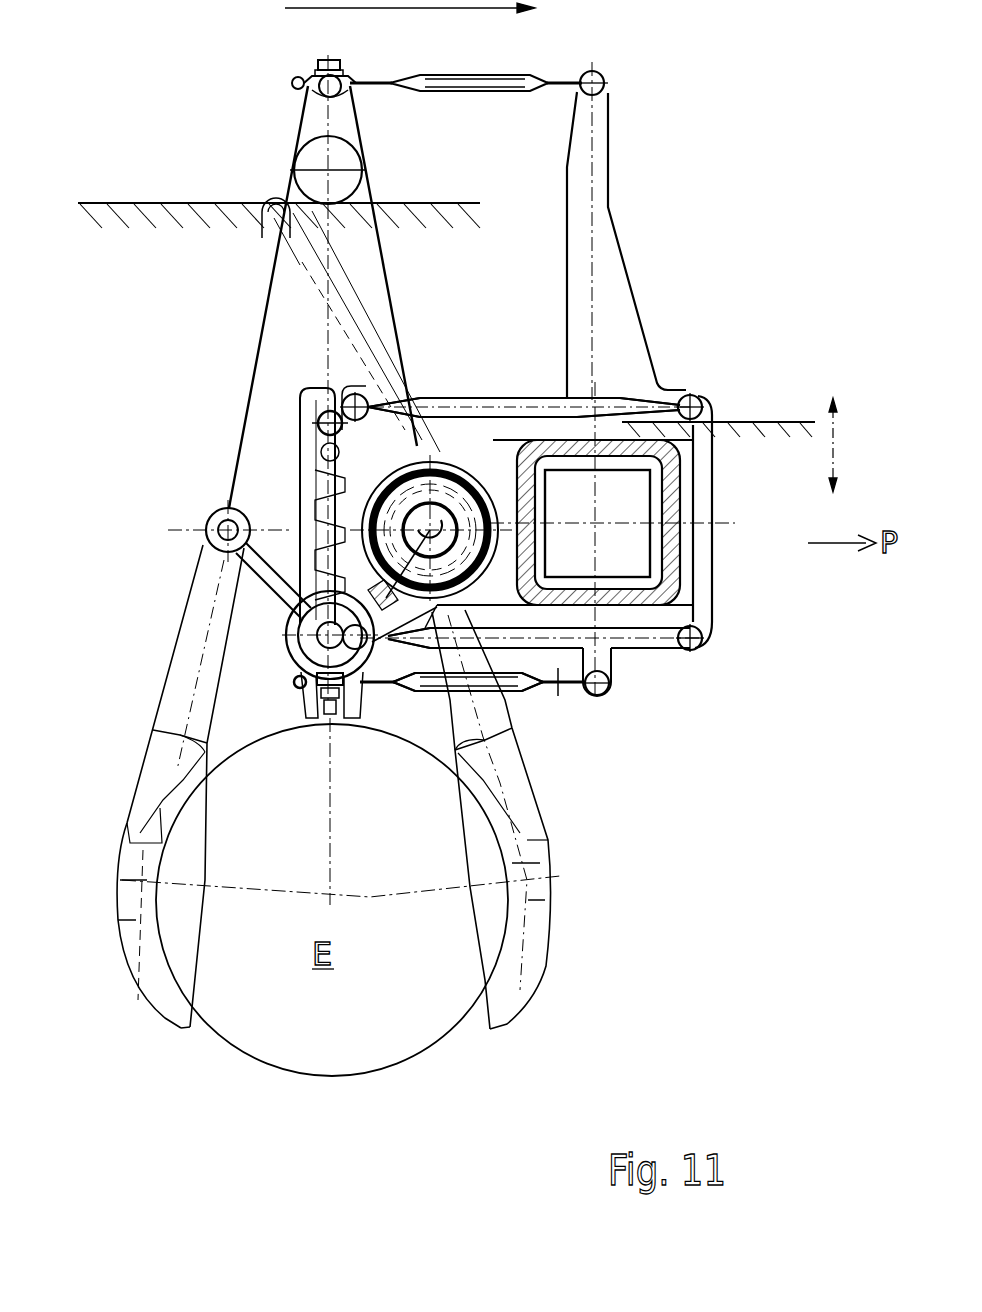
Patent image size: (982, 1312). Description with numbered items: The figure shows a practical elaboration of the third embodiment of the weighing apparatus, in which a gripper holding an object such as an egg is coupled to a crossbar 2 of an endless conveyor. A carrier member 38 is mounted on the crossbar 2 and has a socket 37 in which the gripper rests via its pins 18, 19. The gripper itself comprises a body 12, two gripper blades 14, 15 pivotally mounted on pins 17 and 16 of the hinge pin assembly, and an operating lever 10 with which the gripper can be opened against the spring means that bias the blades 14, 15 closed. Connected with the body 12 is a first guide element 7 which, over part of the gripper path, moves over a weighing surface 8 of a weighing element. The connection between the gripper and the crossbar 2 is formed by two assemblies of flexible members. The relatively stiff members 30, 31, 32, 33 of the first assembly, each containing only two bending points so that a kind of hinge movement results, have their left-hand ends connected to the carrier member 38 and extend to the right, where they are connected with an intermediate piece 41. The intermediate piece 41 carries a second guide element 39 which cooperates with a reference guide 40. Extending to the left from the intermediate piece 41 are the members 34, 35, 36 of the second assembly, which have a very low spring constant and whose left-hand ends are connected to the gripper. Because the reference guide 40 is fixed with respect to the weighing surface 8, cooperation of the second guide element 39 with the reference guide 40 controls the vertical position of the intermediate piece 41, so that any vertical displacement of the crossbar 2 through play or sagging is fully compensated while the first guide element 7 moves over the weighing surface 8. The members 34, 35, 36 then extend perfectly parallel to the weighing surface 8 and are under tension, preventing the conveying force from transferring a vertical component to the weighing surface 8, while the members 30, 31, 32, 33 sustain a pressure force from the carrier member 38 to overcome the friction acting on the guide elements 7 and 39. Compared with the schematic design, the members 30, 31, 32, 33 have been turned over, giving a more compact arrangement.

The crossbar 2 is at (655, 545).
The first guide element 7 is at (355, 197).
The weighing surface 8 is at (229, 202).
The operating lever 10 is at (272, 232).
The body portion 12 is at (366, 287).
The gripper blade 14 is at (530, 908).
The gripper blade 15 is at (126, 891).
The pin 16 is at (208, 540).
The pin 17 is at (437, 528).
The projection 18 is at (294, 678).
The projection 19 is at (320, 420).
The flexible member of first assembly 30 is at (560, 640).
The flexible member of first assembly 31 is at (551, 665).
The flexible member of first assembly 32 is at (452, 397).
The flexible member of first assembly 33 is at (524, 379).
The flexible member of second assembly 34 is at (437, 78).
The flexible member of second assembly 35 is at (534, 692).
The flexible member of second assembly 36 is at (514, 716).
The socket 37 is at (298, 456).
The carrier member 38 is at (488, 468).
The second guide element 39 is at (695, 394).
The reference guide 40 is at (773, 421).
The intermediate piece 41 is at (610, 306).